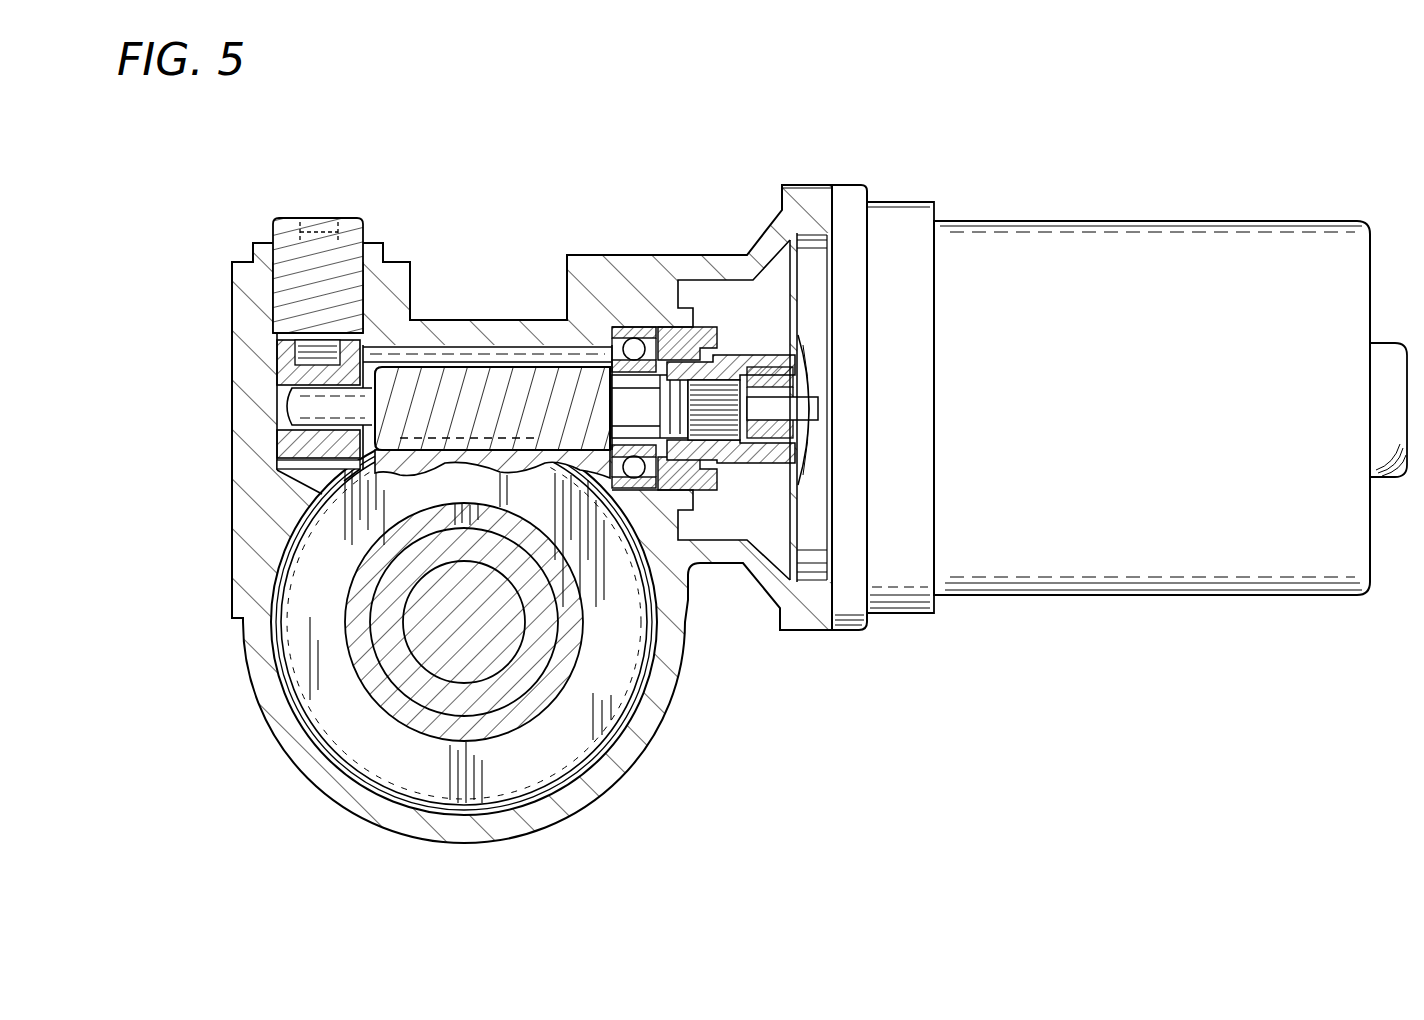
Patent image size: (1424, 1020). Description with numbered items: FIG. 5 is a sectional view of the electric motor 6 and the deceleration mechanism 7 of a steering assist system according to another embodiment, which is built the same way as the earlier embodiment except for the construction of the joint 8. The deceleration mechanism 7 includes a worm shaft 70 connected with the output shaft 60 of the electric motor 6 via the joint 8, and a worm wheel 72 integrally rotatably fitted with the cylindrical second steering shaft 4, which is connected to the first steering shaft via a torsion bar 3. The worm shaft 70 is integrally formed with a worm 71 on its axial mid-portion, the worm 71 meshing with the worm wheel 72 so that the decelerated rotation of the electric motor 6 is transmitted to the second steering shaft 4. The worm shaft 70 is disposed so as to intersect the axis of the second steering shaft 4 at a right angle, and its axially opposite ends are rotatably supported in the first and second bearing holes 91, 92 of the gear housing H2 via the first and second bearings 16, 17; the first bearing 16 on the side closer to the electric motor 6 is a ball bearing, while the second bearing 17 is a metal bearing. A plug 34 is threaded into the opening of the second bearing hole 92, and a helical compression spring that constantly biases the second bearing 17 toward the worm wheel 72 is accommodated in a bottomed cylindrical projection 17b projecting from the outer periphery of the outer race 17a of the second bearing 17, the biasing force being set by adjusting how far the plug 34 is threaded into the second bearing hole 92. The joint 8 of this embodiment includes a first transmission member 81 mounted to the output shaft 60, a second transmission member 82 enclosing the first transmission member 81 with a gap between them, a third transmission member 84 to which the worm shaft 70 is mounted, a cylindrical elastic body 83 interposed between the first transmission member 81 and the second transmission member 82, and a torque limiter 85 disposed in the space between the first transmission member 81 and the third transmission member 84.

The gear housing H2 is at (597, 280).
The torsion bar 3 is at (483, 647).
The second steering shaft 4 is at (445, 688).
The electric motor 6 is at (1125, 246).
The deceleration mechanism 7 is at (343, 713).
The joint 8 is at (735, 468).
The first bearing 16 is at (632, 342).
The second bearing 17 is at (293, 440).
The outer race 17a is at (297, 397).
The bottomed cylindrical projection 17b is at (287, 377).
The plug 34 is at (293, 297).
The output shaft 60 is at (797, 410).
The worm shaft 70 is at (497, 363).
The worm 71 is at (427, 373).
The worm wheel 72 is at (598, 712).
The first transmission member 81 is at (797, 520).
The second transmission member 82 is at (800, 347).
The cylindrical elastic body 83 is at (800, 478).
The third transmission member 84 is at (743, 362).
The torque limiter 85 is at (743, 365).
The first bearing hole 91 is at (592, 492).
The second bearing hole 92 is at (280, 446).